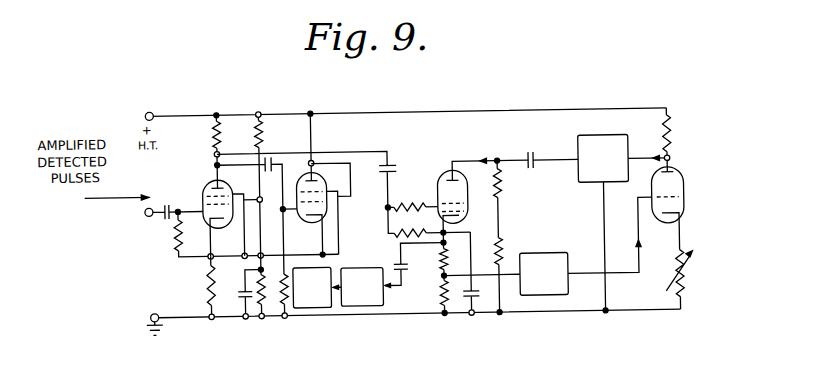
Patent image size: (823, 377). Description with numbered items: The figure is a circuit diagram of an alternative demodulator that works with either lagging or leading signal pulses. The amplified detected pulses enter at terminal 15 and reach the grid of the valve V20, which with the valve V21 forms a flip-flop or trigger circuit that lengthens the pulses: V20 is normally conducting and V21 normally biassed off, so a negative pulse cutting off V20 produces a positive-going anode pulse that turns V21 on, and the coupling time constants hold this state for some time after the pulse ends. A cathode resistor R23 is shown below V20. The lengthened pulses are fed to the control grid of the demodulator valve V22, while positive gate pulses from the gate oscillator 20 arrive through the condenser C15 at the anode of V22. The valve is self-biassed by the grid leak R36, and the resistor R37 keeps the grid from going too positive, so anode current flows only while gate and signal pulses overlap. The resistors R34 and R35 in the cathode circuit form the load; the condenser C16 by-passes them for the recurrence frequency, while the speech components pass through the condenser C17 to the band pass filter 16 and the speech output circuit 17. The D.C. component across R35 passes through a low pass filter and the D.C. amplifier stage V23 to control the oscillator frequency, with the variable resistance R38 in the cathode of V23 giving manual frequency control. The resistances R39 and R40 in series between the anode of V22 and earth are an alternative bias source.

The terminal 15 is at (149, 212).
The band pass filter 16 is at (365, 305).
The speech output circuit 17 is at (307, 306).
The gate oscillator 20 is at (590, 132).
The valve V20 is at (210, 180).
The valve V21 is at (306, 225).
The demodulator valve V22 is at (445, 175).
The D. C. amplifier stage V23 is at (686, 183).
The cathode resistor of V20 R23 is at (208, 282).
The resistor R34 is at (446, 262).
The resistor R35 is at (446, 294).
The grid leak R36 is at (404, 233).
The resistor R37 is at (420, 192).
The variable resistance R38 is at (688, 277).
The resistance R39 is at (501, 251).
The resistance R40 is at (501, 194).
The condenser C15 is at (528, 156).
The condenser C16 is at (472, 317).
The condenser C17 is at (398, 263).